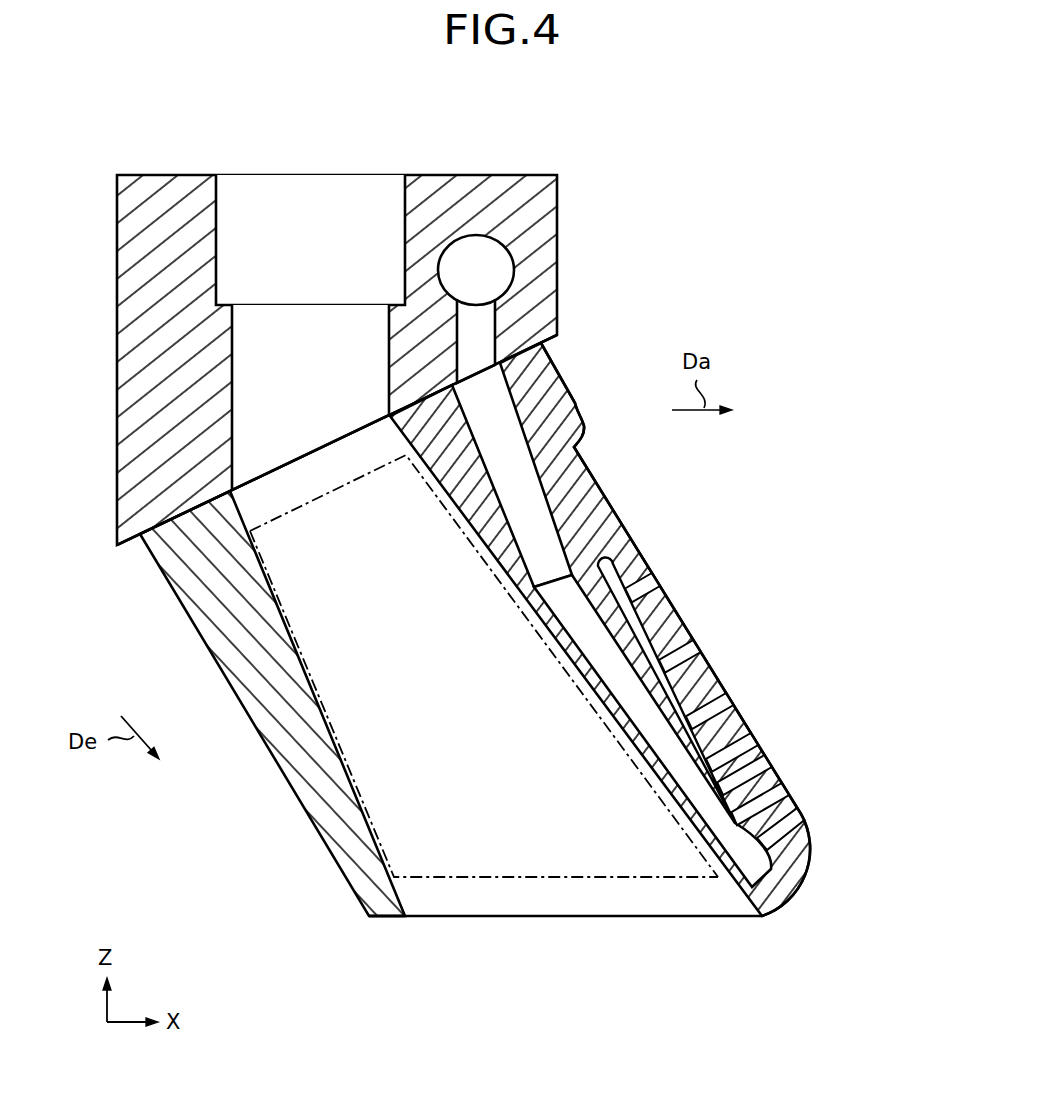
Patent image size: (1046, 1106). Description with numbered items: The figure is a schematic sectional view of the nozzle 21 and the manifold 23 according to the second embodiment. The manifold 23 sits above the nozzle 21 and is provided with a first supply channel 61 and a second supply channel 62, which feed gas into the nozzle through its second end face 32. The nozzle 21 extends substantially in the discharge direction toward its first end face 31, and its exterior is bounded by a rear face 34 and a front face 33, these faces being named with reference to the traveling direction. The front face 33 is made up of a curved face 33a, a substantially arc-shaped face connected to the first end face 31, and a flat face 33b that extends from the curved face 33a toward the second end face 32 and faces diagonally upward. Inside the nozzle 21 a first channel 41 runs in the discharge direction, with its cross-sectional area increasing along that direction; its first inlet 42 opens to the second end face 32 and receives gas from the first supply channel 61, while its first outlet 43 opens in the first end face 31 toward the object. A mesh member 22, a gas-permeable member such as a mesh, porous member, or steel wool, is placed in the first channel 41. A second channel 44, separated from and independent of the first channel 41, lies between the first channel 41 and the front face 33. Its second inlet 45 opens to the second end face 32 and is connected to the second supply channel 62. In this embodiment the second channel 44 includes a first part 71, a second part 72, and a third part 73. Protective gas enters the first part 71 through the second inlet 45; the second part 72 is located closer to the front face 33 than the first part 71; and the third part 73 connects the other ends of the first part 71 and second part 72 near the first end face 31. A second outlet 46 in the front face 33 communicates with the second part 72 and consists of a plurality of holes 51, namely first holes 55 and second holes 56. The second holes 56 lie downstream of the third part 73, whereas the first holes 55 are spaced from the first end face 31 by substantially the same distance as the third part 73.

The nozzle 21 is at (347, 856).
The mesh member 22 is at (272, 616).
The manifold 23 is at (133, 245).
The first end face 31 is at (376, 920).
The second end face 32 is at (248, 508).
The front face 33 is at (675, 632).
The curved face 33a is at (793, 890).
The flat face 33b is at (618, 505).
The rear face 34 is at (214, 664).
The first channel 41 is at (151, 553).
The first inlet 42 is at (266, 481).
The first outlet 43 is at (497, 920).
The second channel 44 is at (518, 431).
The second inlet 45 is at (490, 363).
The second outlet 46 is at (793, 711).
The holes 51 is at (761, 711).
The first holes 55 is at (797, 807).
The second holes 56 is at (735, 699).
The first supply channel 61 is at (318, 195).
The second supply channel 62 is at (481, 256).
The first part 71 is at (571, 582).
The second part 72 is at (686, 688).
The third part 73 is at (764, 852).